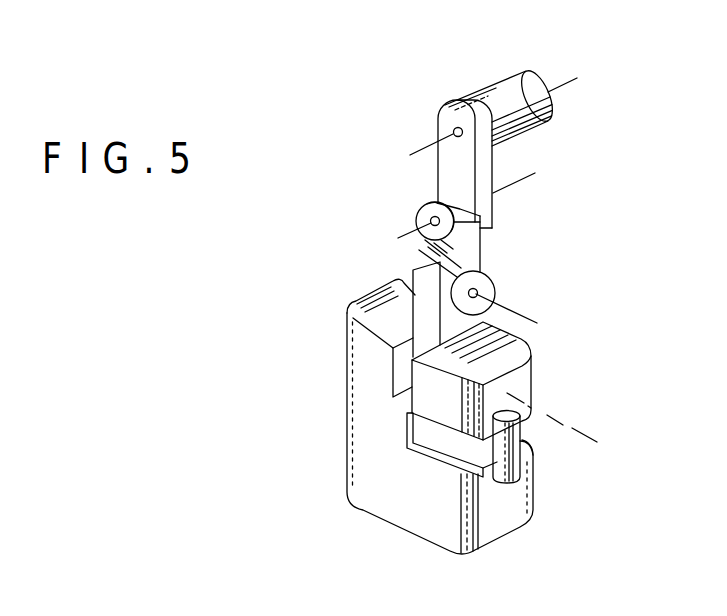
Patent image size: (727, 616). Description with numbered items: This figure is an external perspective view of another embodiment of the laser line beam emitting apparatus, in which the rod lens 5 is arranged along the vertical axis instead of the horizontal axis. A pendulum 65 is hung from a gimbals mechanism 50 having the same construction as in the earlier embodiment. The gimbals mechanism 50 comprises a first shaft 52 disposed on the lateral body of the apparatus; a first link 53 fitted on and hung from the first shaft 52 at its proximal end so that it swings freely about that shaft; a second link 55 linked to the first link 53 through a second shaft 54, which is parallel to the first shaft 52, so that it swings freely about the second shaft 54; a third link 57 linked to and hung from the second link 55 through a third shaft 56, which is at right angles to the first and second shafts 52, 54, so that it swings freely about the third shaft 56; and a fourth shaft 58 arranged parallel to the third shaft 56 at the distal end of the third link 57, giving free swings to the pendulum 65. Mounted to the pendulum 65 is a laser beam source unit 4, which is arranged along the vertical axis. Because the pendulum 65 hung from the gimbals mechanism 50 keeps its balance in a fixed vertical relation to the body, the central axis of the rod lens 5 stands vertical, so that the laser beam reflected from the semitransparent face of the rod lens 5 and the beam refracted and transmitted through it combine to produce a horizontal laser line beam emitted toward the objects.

The gimbals mechanism 50 is at (425, 132).
The first shaft 52 is at (551, 81).
The first link 53 is at (514, 166).
The second shaft 54 is at (527, 184).
The second link 55 is at (479, 250).
The third shaft 56 is at (519, 322).
The third link 57 is at (411, 270).
The fourth shaft 58 is at (582, 424).
The pendulum 65 is at (360, 398).
The laser beam source unit 4 is at (430, 465).
The rod lens 5 is at (531, 475).